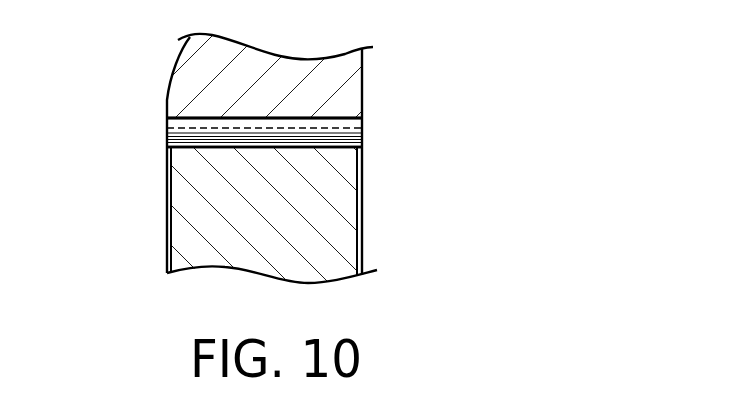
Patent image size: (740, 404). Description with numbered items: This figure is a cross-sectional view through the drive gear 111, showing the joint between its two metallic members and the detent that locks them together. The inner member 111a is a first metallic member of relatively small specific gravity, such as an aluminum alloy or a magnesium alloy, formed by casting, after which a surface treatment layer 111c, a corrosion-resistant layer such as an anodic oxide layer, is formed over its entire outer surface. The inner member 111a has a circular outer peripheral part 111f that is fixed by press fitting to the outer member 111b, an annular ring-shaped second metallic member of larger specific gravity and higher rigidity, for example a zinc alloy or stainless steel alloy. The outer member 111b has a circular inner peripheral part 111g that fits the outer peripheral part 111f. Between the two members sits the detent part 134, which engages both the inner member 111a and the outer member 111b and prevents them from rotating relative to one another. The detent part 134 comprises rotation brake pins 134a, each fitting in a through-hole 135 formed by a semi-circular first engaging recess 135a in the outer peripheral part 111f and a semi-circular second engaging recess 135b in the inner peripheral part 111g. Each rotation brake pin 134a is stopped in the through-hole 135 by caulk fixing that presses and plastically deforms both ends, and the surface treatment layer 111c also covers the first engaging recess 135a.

The drive gear 111 is at (437, 120).
The inner member 111a is at (368, 240).
The outer member 111b is at (370, 90).
The surface treatment layer 111c is at (362, 198).
The outer peripheral part 111f is at (166, 121).
The inner peripheral part 111g is at (195, 158).
The detent part 134 is at (208, 114).
The rotation brake pin 134a is at (240, 118).
The through-hole 135 is at (243, 134).
The first engaging recess 135a is at (237, 143).
The second engaging recess 135b is at (220, 148).